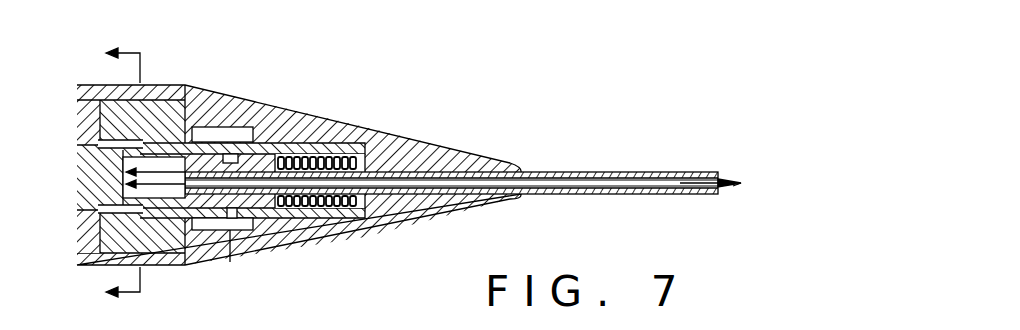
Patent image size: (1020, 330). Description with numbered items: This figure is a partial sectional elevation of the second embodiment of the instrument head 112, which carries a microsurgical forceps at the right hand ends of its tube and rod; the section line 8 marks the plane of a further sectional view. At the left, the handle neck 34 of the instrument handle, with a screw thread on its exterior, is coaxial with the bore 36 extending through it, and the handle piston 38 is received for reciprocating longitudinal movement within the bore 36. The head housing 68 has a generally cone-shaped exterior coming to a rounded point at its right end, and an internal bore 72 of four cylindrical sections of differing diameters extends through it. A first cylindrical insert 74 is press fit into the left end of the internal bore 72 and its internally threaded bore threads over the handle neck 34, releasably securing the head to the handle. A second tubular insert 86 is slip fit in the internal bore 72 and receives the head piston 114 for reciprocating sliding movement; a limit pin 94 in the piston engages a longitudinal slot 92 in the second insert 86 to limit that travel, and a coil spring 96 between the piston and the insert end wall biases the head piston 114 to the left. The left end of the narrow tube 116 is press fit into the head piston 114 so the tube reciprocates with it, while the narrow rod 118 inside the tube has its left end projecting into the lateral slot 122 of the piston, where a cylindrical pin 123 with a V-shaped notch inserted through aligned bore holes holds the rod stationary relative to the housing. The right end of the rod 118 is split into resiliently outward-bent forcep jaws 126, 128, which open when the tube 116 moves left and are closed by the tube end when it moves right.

The section line 8 is at (114, 173).
The handle neck 34 is at (90, 110).
The bore 36 is at (86, 191).
The handle piston 38 is at (88, 153).
The head housing 68 is at (441, 141).
The internal bore 72 is at (221, 151).
The first cylindrical insert 74 is at (78, 266).
The second tubular insert 86 is at (319, 140).
The longitudinal slot 92 is at (207, 126).
The limit pin 94 is at (271, 150).
The coil spring 96 is at (338, 212).
The instrument head 112 is at (356, 122).
The head piston 114 is at (229, 259).
The narrow tube 116 is at (600, 171).
The narrow rod 118 is at (665, 178).
The lateral slot 122 is at (166, 193).
The cylindrical pin 123 is at (86, 234).
The forcep jaw 126 is at (733, 181).
The forcep jaw 128 is at (733, 186).